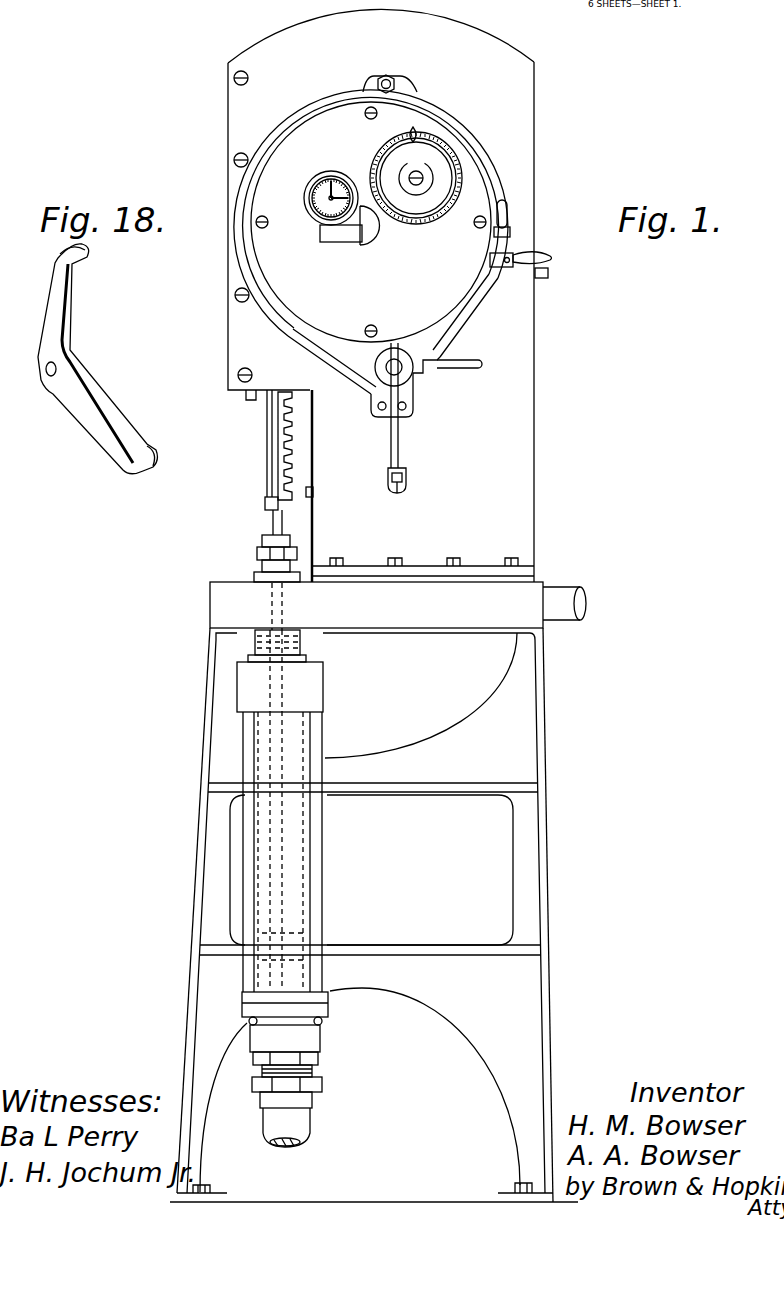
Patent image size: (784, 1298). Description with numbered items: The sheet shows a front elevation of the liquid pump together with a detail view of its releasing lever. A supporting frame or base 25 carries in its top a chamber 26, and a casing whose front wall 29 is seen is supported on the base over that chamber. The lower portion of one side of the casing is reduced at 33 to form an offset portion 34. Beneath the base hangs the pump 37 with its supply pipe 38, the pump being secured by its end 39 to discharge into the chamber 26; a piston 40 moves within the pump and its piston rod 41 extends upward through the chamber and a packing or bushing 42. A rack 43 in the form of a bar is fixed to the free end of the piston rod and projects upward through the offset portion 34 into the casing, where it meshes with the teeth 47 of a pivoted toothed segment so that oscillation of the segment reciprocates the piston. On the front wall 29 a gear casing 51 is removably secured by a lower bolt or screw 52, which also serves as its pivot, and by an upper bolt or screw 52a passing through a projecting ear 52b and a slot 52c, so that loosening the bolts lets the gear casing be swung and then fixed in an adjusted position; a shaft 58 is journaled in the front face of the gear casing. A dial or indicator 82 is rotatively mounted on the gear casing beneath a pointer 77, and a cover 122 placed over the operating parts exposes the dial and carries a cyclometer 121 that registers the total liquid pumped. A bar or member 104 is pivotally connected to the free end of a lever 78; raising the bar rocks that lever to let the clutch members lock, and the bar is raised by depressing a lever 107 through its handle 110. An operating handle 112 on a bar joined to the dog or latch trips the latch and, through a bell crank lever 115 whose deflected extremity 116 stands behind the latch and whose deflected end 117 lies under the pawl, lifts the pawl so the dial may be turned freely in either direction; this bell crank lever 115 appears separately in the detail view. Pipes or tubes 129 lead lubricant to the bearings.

In FIG. 1, the supporting frame or base 25 is at (550, 867).
In FIG. 1, the chamber 26 is at (475, 613).
In FIG. 1, the front wall 29 is at (505, 67).
In FIG. 1, the reduced portion 33 is at (312, 445).
In FIG. 1, the offset portion 34 is at (300, 392).
In FIG. 1, the pump 37 is at (260, 840).
In FIG. 1, the supply pipe 38 is at (300, 1130).
In FIG. 1, the end 39 is at (267, 635).
In FIG. 1, the piston 40 is at (282, 957).
In FIG. 1, the piston rod 41 is at (272, 518).
In FIG. 1, the packing or bushing 42 is at (260, 550).
In FIG. 1, the rack 43 is at (270, 425).
In FIG. 1, the teeth 47 is at (280, 747).
In FIG. 1, the gear casing 51 is at (453, 323).
In FIG. 1, the bolt or screw 52 is at (387, 415).
In FIG. 1, the bolt or screw 52a is at (387, 78).
In FIG. 1, the projecting ear 52b is at (368, 75).
In FIG. 1, the slot 52c is at (402, 77).
In FIG. 1, the shaft 58 is at (390, 368).
In FIG. 1, the pointer 77 is at (417, 135).
In FIG. 1, the lever 78 is at (397, 493).
In FIG. 1, the dial or indicator 82 is at (442, 163).
In FIG. 1, the bar or member 104 is at (400, 452).
In FIG. 1, the lever 107 is at (503, 277).
In FIG. 1, the handle 110 is at (547, 257).
In FIG. 1, the operating handle 112 is at (503, 210).
In FIG. 18, the bell crank lever 115 is at (80, 407).
In FIG. 18, the deflected extremity 116 is at (153, 448).
In FIG. 18, the deflected end 117 is at (83, 255).
In FIG. 1, the cyclometer 121 is at (317, 210).
In FIG. 1, the cover 122 is at (282, 263).
In FIG. 1, the pipes or tubes 129 is at (483, 367).